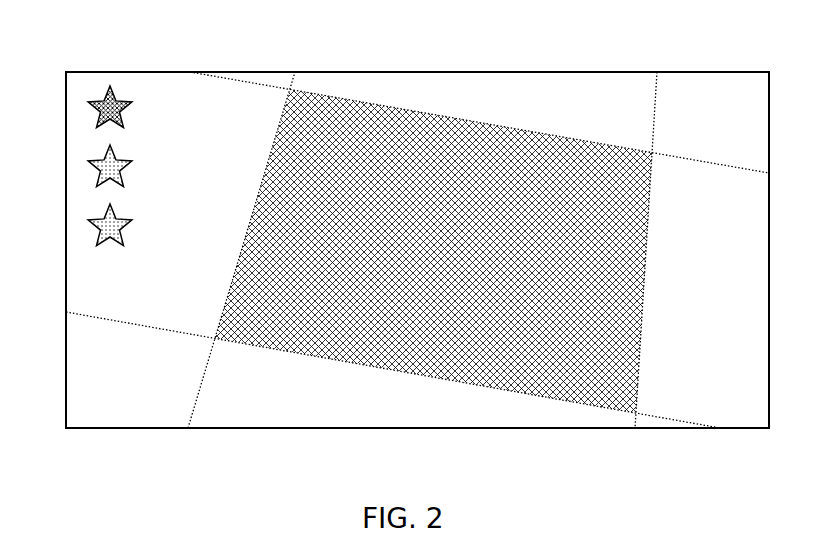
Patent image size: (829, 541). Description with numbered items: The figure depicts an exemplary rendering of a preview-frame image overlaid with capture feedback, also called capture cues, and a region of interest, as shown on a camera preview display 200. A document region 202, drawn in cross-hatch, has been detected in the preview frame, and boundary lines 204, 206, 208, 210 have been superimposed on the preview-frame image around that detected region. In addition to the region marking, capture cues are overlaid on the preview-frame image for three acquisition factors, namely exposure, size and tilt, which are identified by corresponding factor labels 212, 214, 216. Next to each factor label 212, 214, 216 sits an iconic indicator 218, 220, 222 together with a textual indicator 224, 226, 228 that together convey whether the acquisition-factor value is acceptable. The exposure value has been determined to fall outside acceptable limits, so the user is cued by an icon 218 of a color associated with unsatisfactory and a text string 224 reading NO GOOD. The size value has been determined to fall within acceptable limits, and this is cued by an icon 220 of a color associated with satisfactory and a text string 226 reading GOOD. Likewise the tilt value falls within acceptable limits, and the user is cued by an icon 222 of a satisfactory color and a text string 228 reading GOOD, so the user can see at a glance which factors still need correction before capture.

The camera preview display 200 is at (760, 62).
The document region 202 is at (362, 118).
The boundary line 204 is at (519, 115).
The boundary line 206 is at (106, 330).
The boundary line 208 is at (206, 402).
The boundary line 210 is at (658, 291).
The factor label 212 is at (143, 73).
The factor label 214 is at (124, 147).
The factor label 216 is at (121, 208).
The iconic indicator 218 is at (103, 100).
The iconic indicator 220 is at (93, 162).
The iconic indicator 222 is at (93, 225).
The textual indicator 224 is at (246, 108).
The textual indicator 226 is at (211, 162).
The textual indicator 228 is at (142, 253).